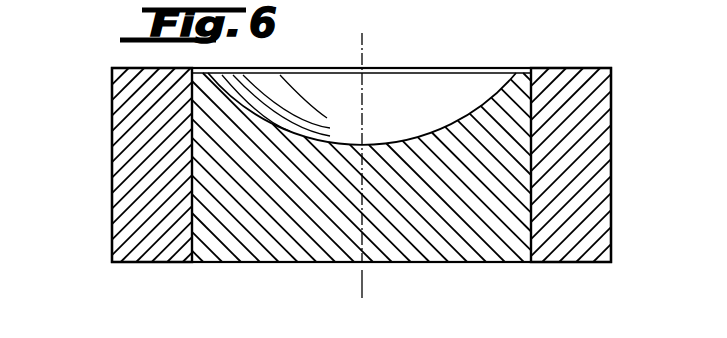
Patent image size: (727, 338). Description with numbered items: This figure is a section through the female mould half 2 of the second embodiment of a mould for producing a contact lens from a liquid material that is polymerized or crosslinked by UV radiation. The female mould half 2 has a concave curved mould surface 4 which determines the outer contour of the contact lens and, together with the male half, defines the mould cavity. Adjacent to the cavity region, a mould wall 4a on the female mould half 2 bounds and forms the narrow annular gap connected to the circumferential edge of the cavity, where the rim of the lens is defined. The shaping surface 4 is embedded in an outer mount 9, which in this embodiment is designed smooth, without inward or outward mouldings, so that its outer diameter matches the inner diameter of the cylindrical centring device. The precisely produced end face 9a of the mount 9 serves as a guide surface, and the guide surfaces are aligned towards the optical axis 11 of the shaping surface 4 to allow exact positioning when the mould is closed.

The female mould half 2 is at (100, 155).
The mount 9 is at (122, 223).
The end face 9a is at (587, 69).
The curved mould surface 4 is at (417, 136).
The mould wall 4a is at (513, 72).
The optical axis 11 is at (360, 290).